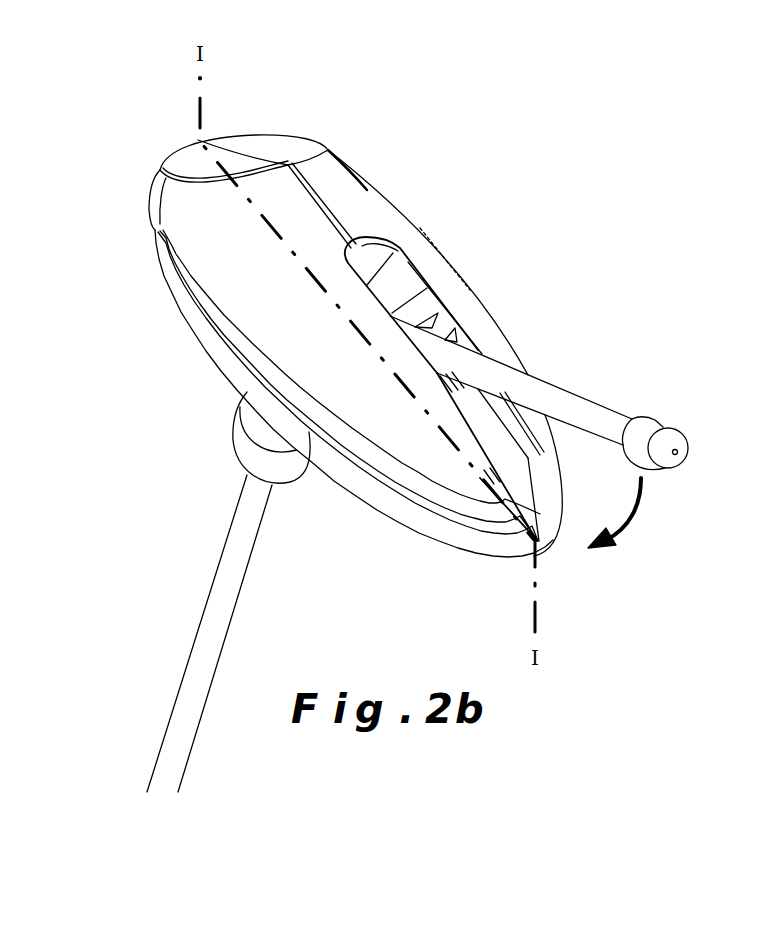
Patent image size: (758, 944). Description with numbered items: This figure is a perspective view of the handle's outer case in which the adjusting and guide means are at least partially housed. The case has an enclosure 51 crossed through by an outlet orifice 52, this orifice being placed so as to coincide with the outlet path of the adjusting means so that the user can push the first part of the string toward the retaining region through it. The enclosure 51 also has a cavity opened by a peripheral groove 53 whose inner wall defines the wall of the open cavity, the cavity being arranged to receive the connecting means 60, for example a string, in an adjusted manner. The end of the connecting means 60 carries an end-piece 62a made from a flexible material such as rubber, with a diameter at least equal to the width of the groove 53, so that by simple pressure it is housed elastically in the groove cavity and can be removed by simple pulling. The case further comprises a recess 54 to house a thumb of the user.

The enclosure 51 is at (405, 237).
The outlet orifice 52 is at (533, 507).
The peripheral groove 53 is at (442, 493).
The recess 54 is at (270, 143).
The connecting means 60 is at (588, 412).
The end-piece 62a is at (672, 440).